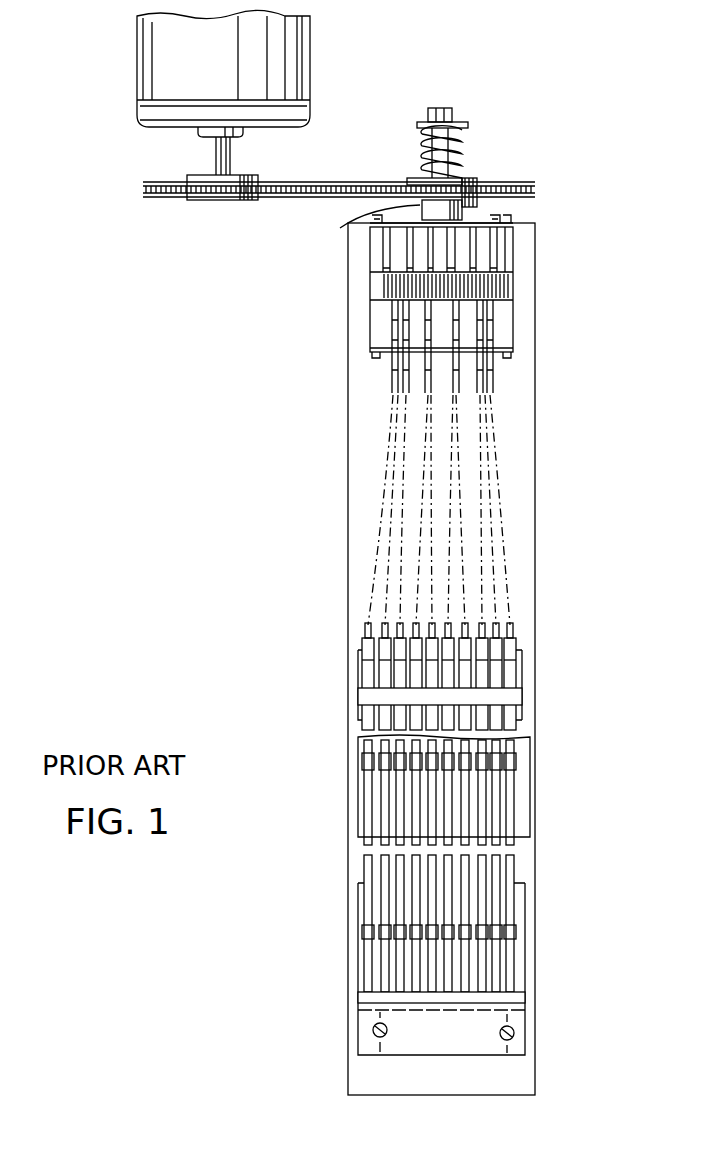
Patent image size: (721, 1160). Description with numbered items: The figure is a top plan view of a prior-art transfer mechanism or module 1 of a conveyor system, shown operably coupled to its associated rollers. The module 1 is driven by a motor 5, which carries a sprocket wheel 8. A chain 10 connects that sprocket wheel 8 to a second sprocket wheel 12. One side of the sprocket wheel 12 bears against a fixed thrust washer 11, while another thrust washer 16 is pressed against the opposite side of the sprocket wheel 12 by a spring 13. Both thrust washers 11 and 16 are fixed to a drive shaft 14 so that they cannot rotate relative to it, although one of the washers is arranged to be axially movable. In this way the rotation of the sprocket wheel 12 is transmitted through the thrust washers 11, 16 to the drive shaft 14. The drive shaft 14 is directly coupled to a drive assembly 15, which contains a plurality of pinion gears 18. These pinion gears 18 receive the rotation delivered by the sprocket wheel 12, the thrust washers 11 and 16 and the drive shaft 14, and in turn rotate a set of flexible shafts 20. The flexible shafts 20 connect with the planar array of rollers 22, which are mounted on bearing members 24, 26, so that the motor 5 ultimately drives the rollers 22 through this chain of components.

The transfer mechanism 1 is at (282, 527).
The motor 5 is at (300, 78).
The sprocket wheel 8 is at (225, 200).
The chain 10 is at (300, 198).
The fixed thrust washer 11 is at (349, 228).
The sprocket wheel 12 is at (470, 178).
The spring 13 is at (455, 140).
The drive shaft 14 is at (425, 138).
The drive assembly 15 is at (518, 269).
The thrust washer 16 is at (410, 178).
The pinion gears 18 is at (492, 292).
The flexible shafts 20 is at (492, 435).
The rollers 22 is at (400, 868).
The bearing member 24 is at (515, 697).
The bearing member 26 is at (518, 765).